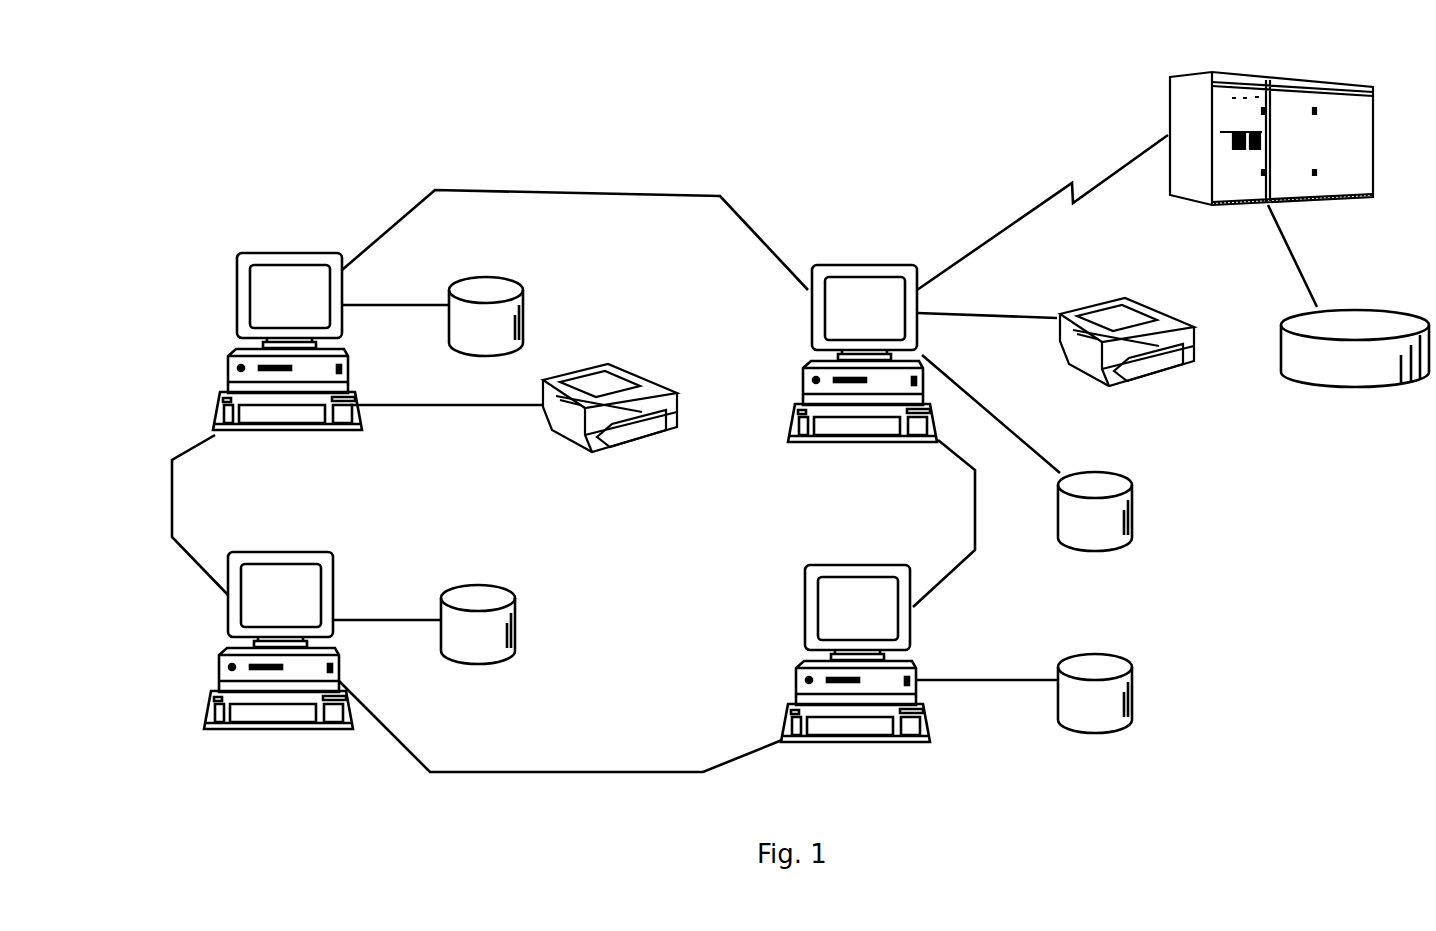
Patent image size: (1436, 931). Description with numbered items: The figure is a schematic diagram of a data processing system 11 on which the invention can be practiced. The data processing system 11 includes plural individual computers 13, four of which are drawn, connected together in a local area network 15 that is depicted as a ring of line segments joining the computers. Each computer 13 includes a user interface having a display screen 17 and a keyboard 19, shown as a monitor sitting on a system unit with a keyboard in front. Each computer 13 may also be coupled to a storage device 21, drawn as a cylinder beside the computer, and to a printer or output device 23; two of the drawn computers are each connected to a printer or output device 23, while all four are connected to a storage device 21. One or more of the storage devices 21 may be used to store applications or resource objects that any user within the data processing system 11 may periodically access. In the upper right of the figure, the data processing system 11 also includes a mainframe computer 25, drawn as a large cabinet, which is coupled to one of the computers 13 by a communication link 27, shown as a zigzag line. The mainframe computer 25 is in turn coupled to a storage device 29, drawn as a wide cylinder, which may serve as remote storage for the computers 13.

The data processing system 11 is at (649, 160).
The computer 13 is at (543, 482).
The local area network (LAN) 15 is at (576, 770).
The display screen 17 is at (536, 456).
The keyboard 19 is at (543, 581).
The storage device 21 is at (523, 302).
The printer or output device 23 is at (636, 364).
The mainframe computer 25 is at (1168, 91).
The communication link 27 is at (1003, 222).
The storage device 29 is at (1378, 311).